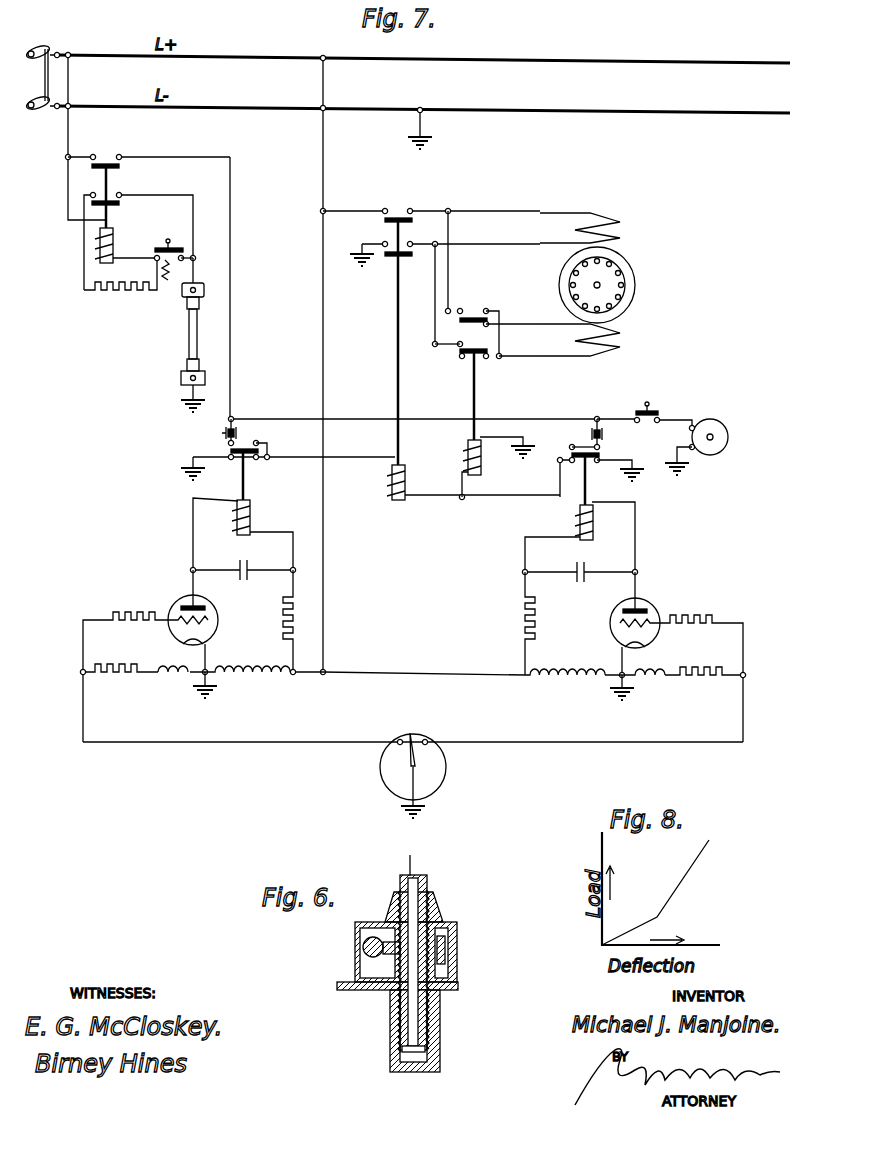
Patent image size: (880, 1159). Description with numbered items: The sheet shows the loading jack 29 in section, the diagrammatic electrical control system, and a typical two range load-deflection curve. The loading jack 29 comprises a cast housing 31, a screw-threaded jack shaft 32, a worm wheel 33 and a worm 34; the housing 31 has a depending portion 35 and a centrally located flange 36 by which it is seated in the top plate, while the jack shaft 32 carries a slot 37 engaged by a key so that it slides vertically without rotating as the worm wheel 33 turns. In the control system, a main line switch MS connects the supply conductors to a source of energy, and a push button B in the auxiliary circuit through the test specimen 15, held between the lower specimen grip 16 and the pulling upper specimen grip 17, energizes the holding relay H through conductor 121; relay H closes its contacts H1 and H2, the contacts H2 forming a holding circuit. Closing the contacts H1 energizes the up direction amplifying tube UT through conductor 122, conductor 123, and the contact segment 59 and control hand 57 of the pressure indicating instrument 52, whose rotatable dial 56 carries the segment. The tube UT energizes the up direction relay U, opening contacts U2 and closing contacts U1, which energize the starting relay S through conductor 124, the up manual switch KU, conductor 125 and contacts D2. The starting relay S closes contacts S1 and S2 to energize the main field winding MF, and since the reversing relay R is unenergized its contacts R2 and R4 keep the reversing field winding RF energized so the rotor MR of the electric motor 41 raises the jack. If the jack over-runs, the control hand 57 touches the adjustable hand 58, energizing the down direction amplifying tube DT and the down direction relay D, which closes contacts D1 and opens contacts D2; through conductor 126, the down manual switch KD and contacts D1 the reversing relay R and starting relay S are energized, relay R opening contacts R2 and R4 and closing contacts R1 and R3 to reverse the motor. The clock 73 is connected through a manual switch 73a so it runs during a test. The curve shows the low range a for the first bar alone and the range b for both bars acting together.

In FIG. 7, the main line switch MS is at (42, 86).
In FIG. 7, the conductor 121 is at (68, 200).
In FIG. 7, the conductor 122 is at (323, 180).
In FIG. 7, the conductor 123 is at (233, 744).
In FIG. 7, the conductor 124 is at (230, 347).
In FIG. 7, the conductor 125 is at (531, 498).
In FIG. 7, the conductor 126 is at (279, 417).
In FIG. 7, the holding relay H is at (114, 238).
In FIG. 7, the contacts of holding relay H1 is at (108, 160).
In FIG. 7, the contacts of holding relay H2 is at (116, 198).
In FIG. 7, the push button B is at (170, 246).
In FIG. 7, the pulling upper specimen grip 17 is at (203, 292).
In FIG. 7, the test specimen 15 is at (200, 345).
In FIG. 7, the lower specimen grip 16 is at (181, 381).
In FIG. 7, the up manual switch KU is at (222, 433).
In FIG. 7, the contacts of up direction relay U1 is at (258, 444).
In FIG. 7, the contacts of up direction relay U2 is at (259, 458).
In FIG. 7, the up direction relay U is at (252, 516).
In FIG. 7, the up direction amplifying tube UT is at (220, 622).
In FIG. 7, the contacts of starting relay S1 is at (406, 204).
In FIG. 7, the contacts of starting relay S2 is at (378, 248).
In FIG. 7, the starting relay S is at (390, 487).
In FIG. 7, the contacts of reversing relay R1 is at (472, 311).
In FIG. 7, the contacts of reversing relay R2 is at (478, 325).
In FIG. 7, the contacts of reversing relay R3 is at (458, 353).
In FIG. 7, the contacts of reversing relay R4 is at (489, 358).
In FIG. 7, the reversing relay R is at (465, 452).
In FIG. 7, the main field winding MF is at (660, 229).
In FIG. 7, the reversing field winding RF is at (660, 349).
In FIG. 7, the rotor MR is at (560, 276).
In FIG. 7, the electric motor 41 is at (666, 284).
In FIG. 7, the contacts of down direction relay D1 is at (574, 448).
In FIG. 7, the contacts of down direction relay D2 is at (598, 461).
In FIG. 7, the down manual switch KD is at (604, 434).
In FIG. 7, the down direction relay D is at (596, 515).
In FIG. 7, the down direction amplifying tube DT is at (611, 625).
In FIG. 7, the manual switch 73a is at (648, 404).
In FIG. 7, the clock 73 is at (729, 435).
In FIG. 7, the pressure indicating instrument 52 is at (478, 779).
In FIG. 7, the rotatable dial 56 is at (382, 785).
In FIG. 7, the control hand 57 is at (410, 736).
In FIG. 7, the adjustable hand 58 is at (430, 740).
In FIG. 7, the contact segment 59 is at (396, 741).
In FIG. 6, the slot 37 is at (414, 874).
In FIG. 6, the screw-threaded jack shaft 32 is at (432, 890).
In FIG. 6, the worm wheel 33 is at (448, 943).
In FIG. 6, the housing 31 is at (458, 970).
In FIG. 6, the loading jack 29 is at (360, 948).
In FIG. 6, the worm 34 is at (362, 963).
In FIG. 6, the flange 36 is at (344, 988).
In FIG. 6, the depending portion 35 is at (440, 1060).
In FIG. 8, the range for first bar alone a is at (634, 927).
In FIG. 8, the range for both bars b is at (678, 883).